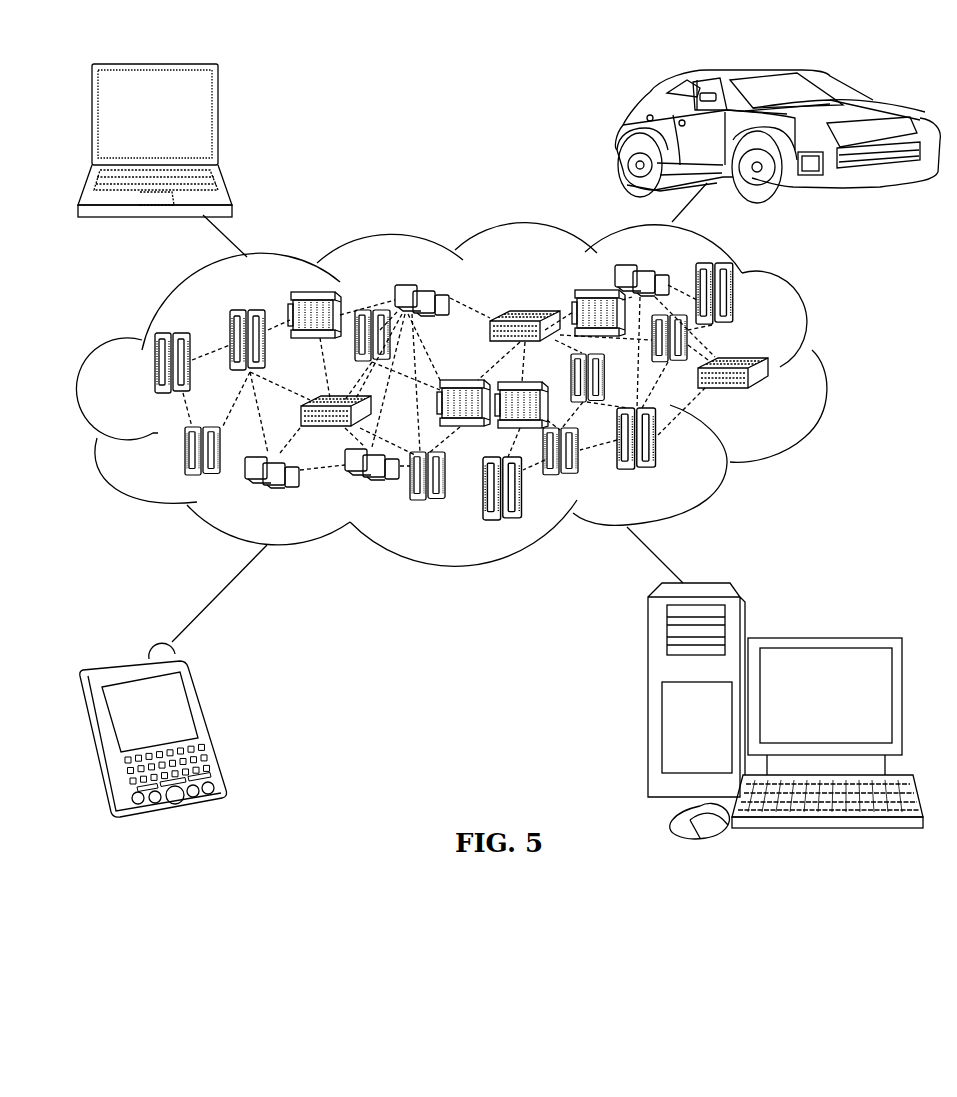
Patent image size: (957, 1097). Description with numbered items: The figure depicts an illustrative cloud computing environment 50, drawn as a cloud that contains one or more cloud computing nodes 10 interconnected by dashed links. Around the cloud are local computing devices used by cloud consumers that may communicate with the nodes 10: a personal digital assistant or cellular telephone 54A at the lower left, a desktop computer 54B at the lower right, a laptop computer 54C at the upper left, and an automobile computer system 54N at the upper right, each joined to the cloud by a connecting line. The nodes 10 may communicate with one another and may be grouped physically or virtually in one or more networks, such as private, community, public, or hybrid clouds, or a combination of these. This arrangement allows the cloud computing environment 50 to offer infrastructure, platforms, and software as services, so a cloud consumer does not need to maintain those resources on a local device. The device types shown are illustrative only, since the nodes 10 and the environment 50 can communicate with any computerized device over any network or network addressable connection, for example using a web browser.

The cloud computing nodes 10 is at (770, 400).
The cloud computing environment 50 is at (822, 375).
The personal digital assistant (PDA) or cellular telephone 54A is at (207, 723).
The desktop computer 54B is at (822, 637).
The laptop computer 54C is at (218, 122).
The automobile computer system 54N is at (620, 138).